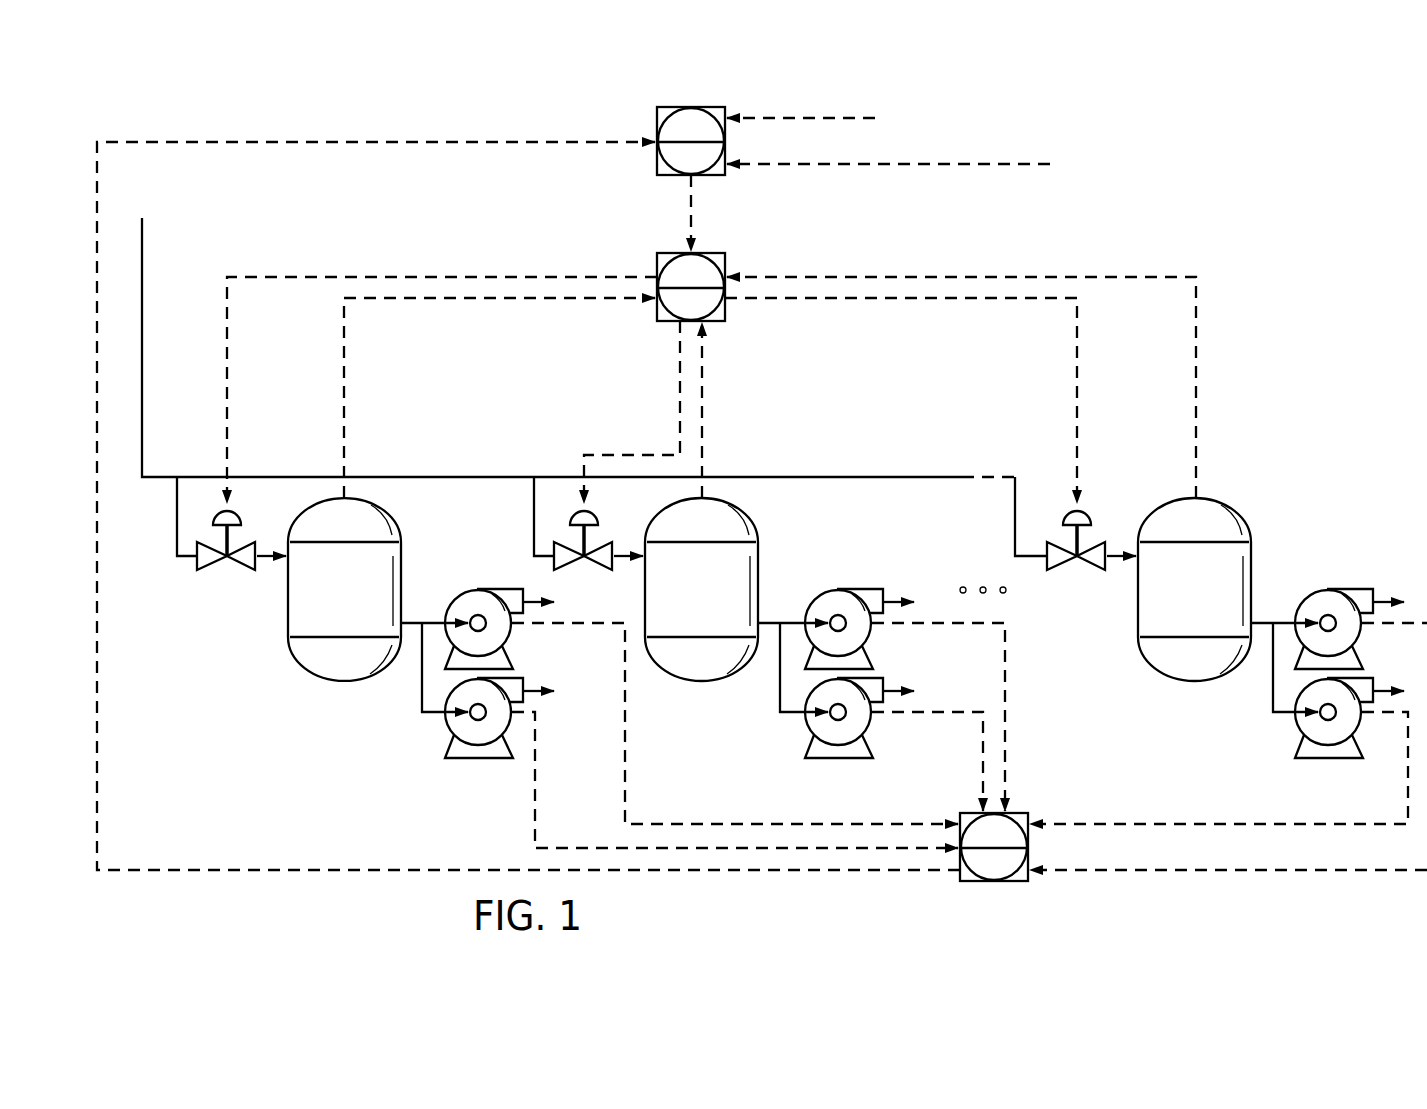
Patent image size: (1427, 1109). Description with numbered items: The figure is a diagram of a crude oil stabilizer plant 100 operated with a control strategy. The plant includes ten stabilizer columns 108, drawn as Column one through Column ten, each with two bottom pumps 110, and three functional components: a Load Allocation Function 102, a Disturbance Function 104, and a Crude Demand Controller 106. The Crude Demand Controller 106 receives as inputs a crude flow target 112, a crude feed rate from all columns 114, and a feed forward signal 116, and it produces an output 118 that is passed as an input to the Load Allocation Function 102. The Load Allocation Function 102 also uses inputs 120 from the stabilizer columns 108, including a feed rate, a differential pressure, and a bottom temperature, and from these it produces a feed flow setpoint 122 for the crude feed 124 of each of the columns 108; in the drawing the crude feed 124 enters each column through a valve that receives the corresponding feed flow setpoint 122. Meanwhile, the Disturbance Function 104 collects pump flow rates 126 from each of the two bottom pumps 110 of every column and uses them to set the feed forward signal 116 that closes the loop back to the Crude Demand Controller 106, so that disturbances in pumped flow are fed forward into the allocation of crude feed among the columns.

The crude oil stabilizer plant 100 is at (1380, 96).
The Load Allocation Function 102 is at (716, 253).
The Disturbance Function 104 is at (992, 882).
The Crude Demand Controller 106 is at (657, 130).
The stabilizer column 108 is at (288, 590).
The bottom pump 110 is at (478, 590).
The crude flow target 112 is at (822, 117).
The crude feed rate from all columns 114 is at (962, 166).
The feed forward signal 116 is at (370, 144).
The output 118 is at (688, 212).
The inputs from the stabilizer columns 120 is at (343, 390).
The feed flow setpoint 122 is at (310, 275).
The crude feed 124 is at (142, 265).
The pump flow rates 126 is at (533, 795).